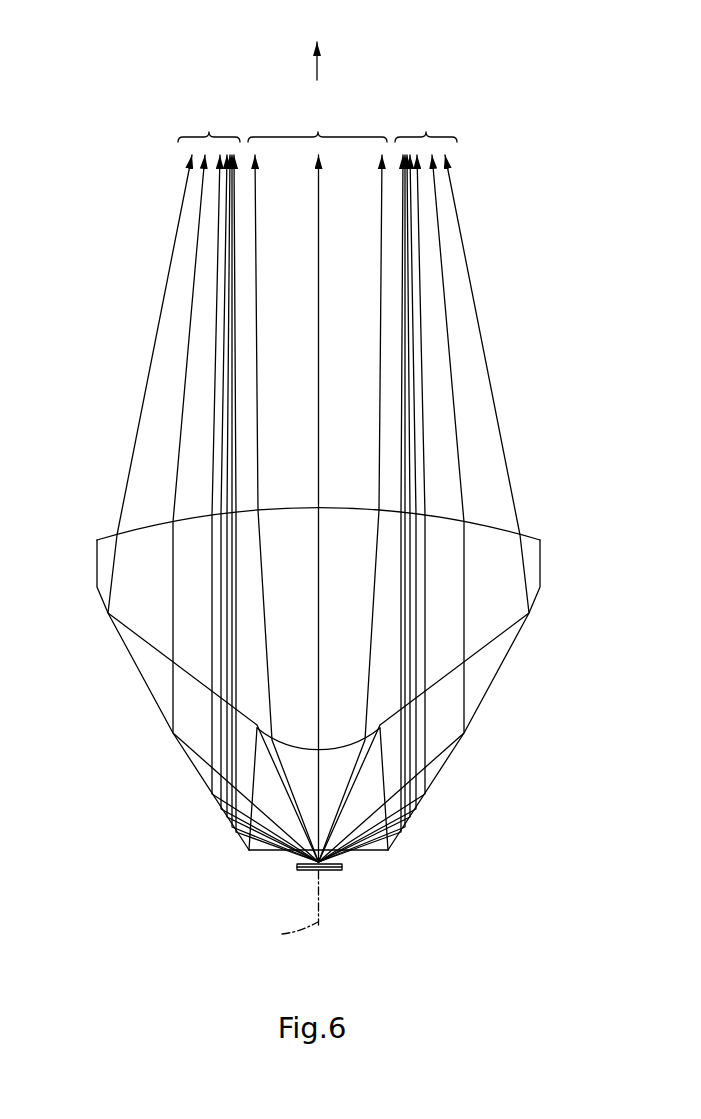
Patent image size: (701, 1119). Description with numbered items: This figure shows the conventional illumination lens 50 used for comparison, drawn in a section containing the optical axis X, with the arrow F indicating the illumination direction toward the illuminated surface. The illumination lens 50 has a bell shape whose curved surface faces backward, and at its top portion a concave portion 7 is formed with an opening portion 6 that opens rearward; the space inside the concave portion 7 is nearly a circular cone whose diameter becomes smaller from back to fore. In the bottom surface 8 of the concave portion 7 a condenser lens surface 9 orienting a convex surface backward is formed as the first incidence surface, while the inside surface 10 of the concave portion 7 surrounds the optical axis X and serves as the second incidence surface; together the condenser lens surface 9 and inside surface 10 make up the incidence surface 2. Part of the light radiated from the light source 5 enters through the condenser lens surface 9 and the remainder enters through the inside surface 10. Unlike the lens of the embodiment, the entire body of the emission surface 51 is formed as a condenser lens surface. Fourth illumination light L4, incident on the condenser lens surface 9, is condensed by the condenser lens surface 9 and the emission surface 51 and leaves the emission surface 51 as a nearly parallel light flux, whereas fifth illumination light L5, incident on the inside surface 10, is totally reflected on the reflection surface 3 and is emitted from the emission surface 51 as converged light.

The incidence surface 2 is at (333, 756).
The reflection surface 3 is at (140, 678).
The light source 5 is at (330, 871).
The opening portion 6 is at (372, 851).
The concave portion 7 is at (367, 820).
The bottom surface 8 is at (318, 675).
The condenser lens surface 9 is at (308, 742).
The inside surface 10 is at (253, 809).
The illumination lens 50 is at (293, 705).
The emission surface 51 is at (153, 525).
The arrow F is at (316, 41).
The fourth illumination light L4 is at (317, 122).
The fifth illumination light L5 is at (317, 122).
The optical axis X is at (289, 907).